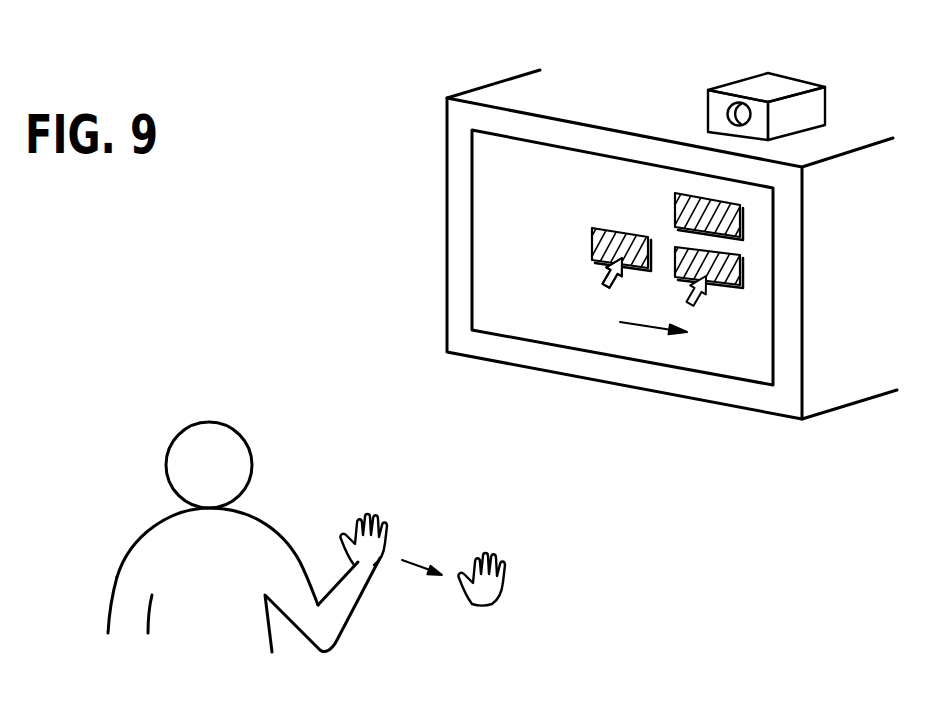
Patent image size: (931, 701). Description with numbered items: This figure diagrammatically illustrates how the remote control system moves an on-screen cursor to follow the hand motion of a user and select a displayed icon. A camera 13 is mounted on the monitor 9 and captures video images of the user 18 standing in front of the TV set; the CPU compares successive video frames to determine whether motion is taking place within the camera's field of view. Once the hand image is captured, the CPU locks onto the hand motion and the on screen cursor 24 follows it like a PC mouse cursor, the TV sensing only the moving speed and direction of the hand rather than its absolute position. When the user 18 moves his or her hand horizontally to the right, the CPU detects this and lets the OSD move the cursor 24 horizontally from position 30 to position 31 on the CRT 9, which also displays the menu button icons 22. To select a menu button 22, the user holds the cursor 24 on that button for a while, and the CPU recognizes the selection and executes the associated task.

The monitor 9 is at (842, 408).
The camera 13 is at (795, 78).
The user 18 is at (113, 585).
The menu button icon 22 is at (675, 247).
The on screen cursor 24 is at (592, 279).
The cursor position 30 is at (606, 288).
The cursor position 31 is at (690, 306).